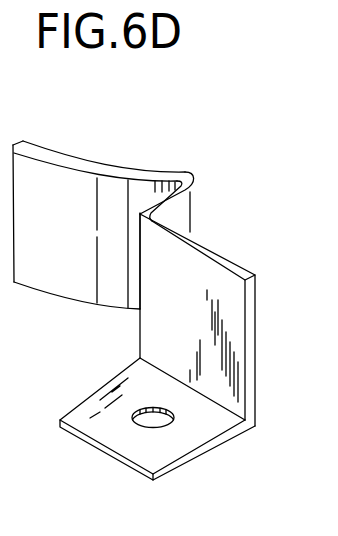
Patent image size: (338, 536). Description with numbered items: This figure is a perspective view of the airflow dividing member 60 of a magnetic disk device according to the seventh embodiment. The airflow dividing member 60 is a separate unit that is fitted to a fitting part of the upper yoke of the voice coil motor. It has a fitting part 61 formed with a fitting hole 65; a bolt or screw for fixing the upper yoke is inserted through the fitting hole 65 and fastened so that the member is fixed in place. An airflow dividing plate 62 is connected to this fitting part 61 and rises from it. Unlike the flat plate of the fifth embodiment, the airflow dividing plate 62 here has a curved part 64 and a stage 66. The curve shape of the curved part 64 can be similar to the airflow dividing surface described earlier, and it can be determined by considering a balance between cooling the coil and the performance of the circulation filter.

The airflow dividing member 60 is at (191, 158).
The fitting part 61 is at (165, 452).
The airflow dividing plate 62 is at (202, 283).
The curved part 64 is at (157, 172).
The fitting hole 65 is at (148, 425).
The stage 66 is at (185, 218).